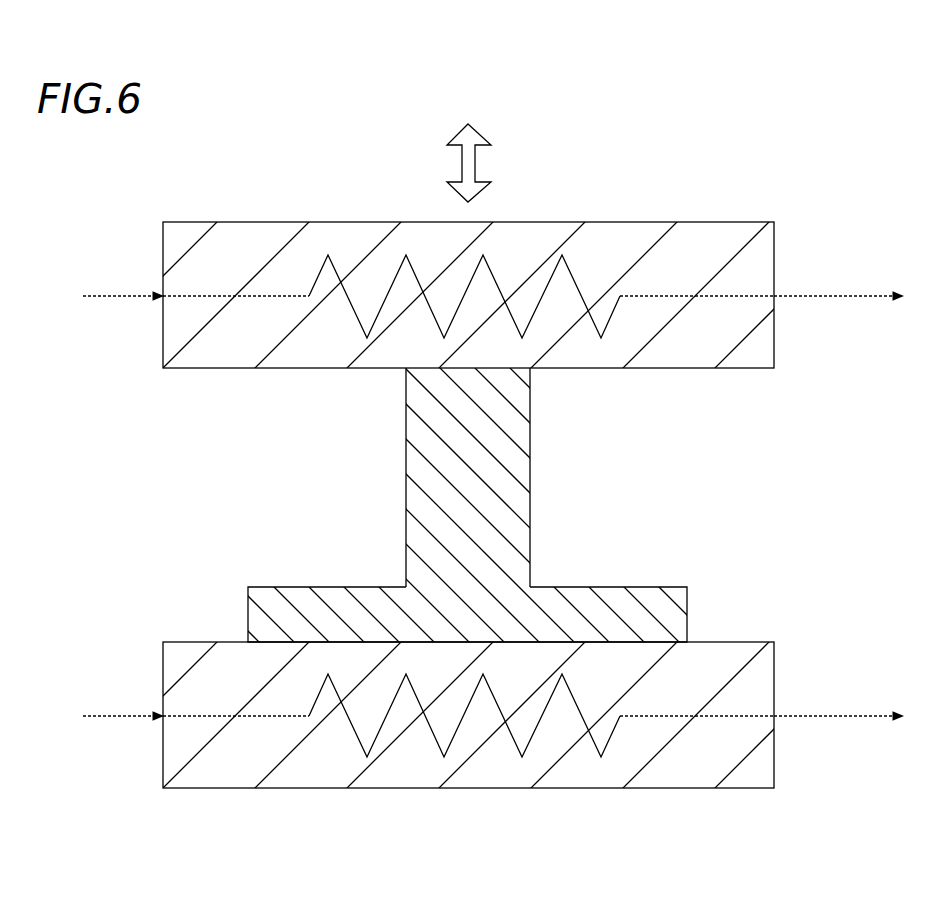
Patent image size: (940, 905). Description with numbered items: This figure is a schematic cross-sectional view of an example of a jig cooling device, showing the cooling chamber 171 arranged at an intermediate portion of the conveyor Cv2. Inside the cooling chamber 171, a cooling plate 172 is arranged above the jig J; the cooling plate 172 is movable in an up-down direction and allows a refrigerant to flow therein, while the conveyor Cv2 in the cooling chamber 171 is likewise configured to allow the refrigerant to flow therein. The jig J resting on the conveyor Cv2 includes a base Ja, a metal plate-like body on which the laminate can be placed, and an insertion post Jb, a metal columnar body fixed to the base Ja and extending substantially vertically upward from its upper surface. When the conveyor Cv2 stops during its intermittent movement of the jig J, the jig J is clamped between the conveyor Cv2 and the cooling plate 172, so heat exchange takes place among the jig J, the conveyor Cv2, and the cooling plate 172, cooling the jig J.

The cooling chamber 171 is at (477, 256).
The cooling plate 172 is at (773, 336).
The jig J is at (396, 505).
The base Ja is at (687, 605).
The insertion post Jb is at (530, 473).
The conveyor Cv2 is at (773, 755).